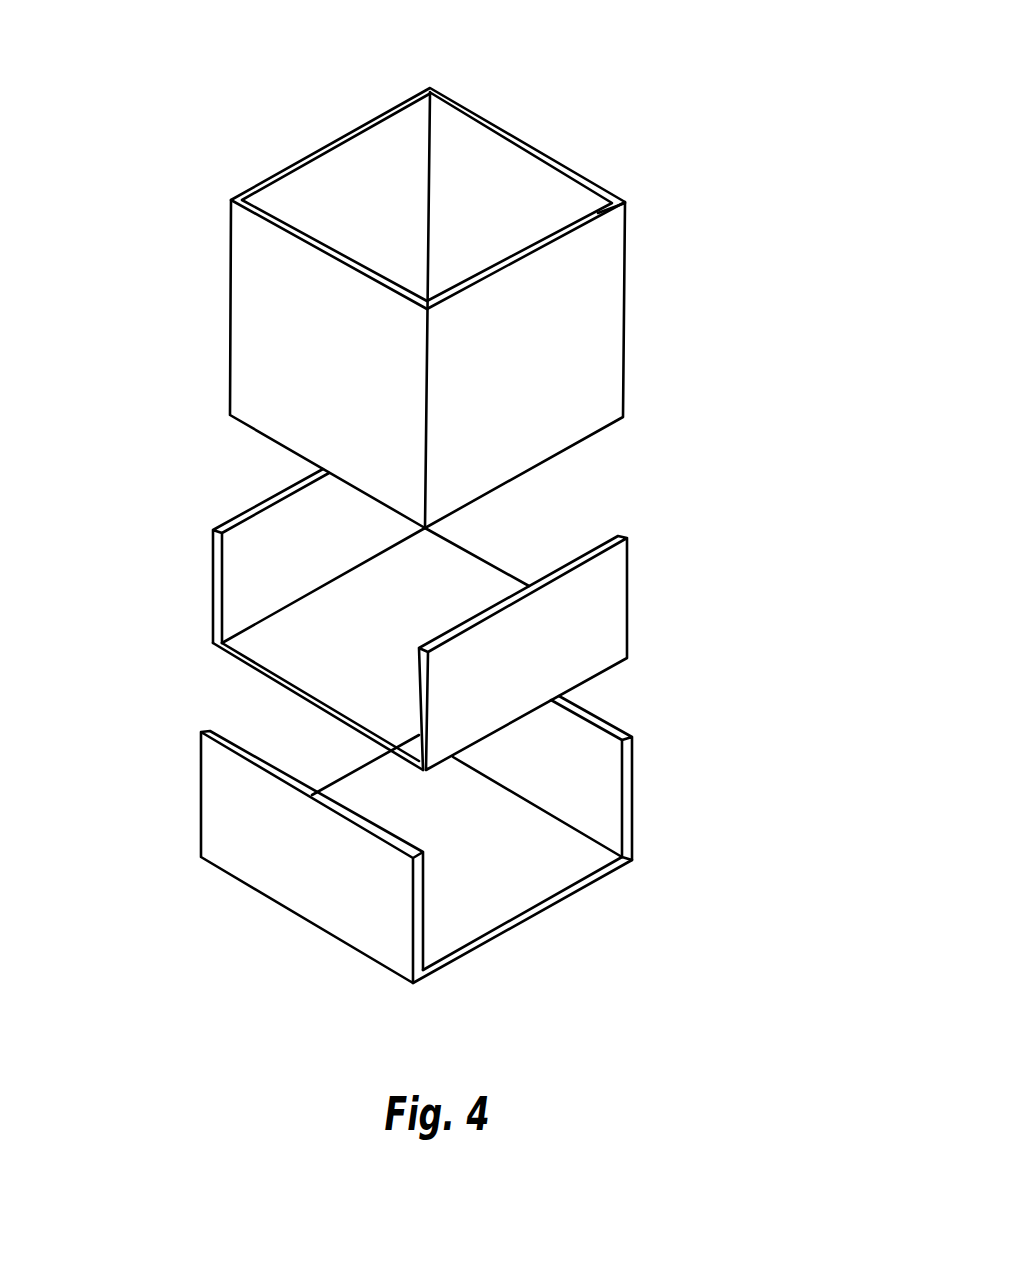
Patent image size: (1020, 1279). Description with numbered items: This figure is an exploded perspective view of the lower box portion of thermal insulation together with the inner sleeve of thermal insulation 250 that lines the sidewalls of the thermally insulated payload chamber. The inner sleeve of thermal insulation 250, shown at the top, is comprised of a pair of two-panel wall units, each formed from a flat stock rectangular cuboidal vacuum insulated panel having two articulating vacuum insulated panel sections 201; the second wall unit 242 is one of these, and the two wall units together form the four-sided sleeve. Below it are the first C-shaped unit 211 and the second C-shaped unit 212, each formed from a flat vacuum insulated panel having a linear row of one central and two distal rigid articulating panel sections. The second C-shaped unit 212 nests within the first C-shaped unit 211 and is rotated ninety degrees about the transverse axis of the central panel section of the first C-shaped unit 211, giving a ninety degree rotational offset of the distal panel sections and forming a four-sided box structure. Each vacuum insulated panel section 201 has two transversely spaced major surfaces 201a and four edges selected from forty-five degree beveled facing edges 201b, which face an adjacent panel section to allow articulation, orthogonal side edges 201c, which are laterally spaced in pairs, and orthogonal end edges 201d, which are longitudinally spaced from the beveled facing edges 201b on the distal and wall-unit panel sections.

The vacuum insulated panel section 201 is at (292, 200).
The major surface 201a is at (248, 863).
The beveled facing edge 201b is at (230, 232).
The orthogonal side edge 201c is at (372, 122).
The orthogonal end edge 201d is at (431, 88).
The first C-shaped unit 211 is at (303, 970).
The second C-shaped unit 212 is at (655, 548).
The second wall unit 242 is at (355, 170).
The inner sleeve of thermal insulation 250 is at (359, 308).